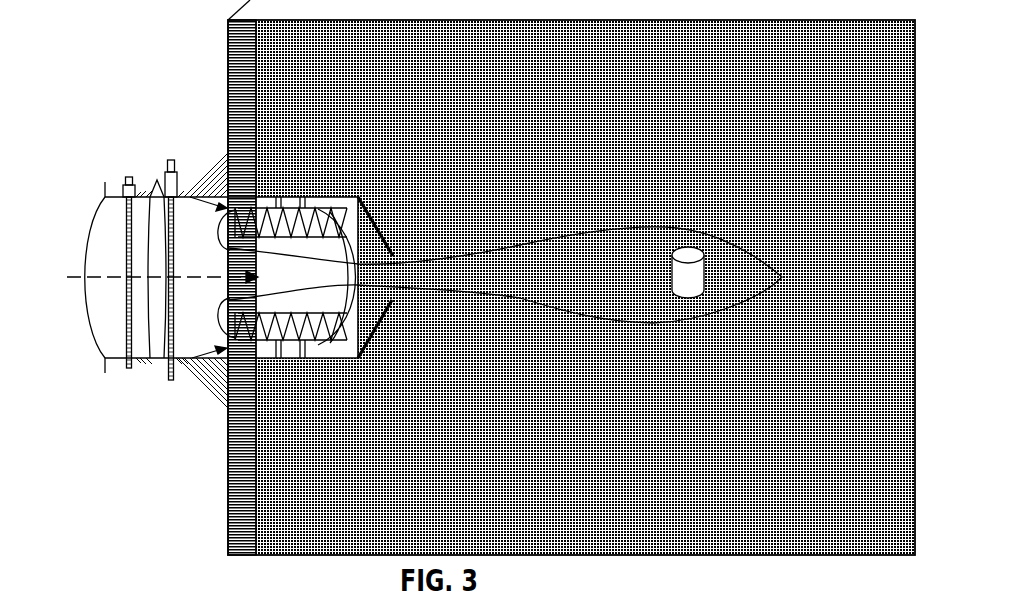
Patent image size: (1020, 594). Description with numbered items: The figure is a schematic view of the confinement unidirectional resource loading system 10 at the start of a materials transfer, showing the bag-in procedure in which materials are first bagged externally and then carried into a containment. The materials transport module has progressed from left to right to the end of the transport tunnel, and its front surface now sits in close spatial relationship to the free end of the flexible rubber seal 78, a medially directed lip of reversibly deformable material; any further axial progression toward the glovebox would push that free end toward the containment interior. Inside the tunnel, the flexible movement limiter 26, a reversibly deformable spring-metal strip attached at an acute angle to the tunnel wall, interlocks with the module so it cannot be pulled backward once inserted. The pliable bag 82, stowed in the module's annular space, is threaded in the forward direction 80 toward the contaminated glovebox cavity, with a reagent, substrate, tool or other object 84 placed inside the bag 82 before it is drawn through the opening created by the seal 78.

The confinement unidirectional resource loading system 10 is at (100, 88).
The flexible movement limiter 26 is at (228, 437).
The medially directed lip 78 is at (380, 222).
The forward direction 80 is at (83, 272).
The pliable bag 82 is at (571, 238).
The object 84 is at (670, 264).